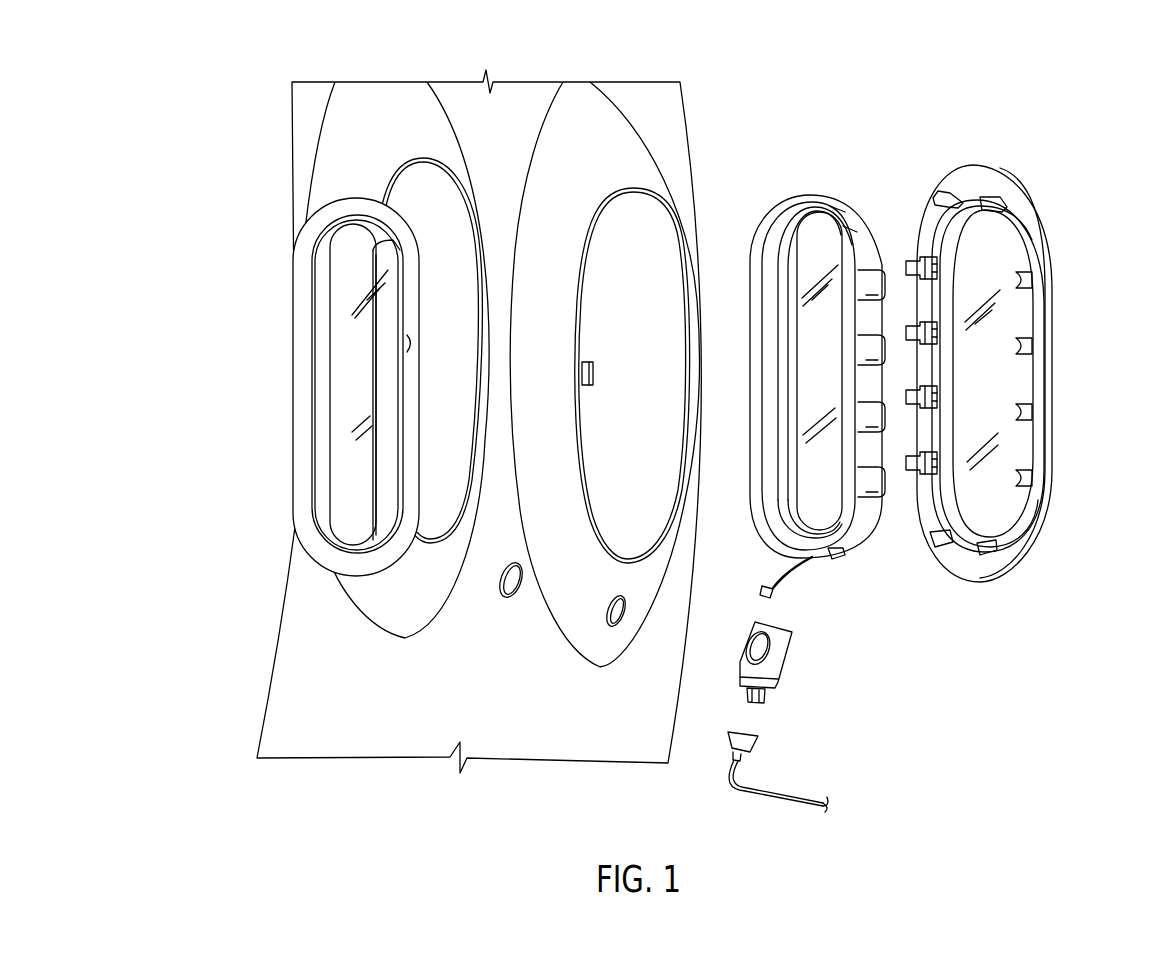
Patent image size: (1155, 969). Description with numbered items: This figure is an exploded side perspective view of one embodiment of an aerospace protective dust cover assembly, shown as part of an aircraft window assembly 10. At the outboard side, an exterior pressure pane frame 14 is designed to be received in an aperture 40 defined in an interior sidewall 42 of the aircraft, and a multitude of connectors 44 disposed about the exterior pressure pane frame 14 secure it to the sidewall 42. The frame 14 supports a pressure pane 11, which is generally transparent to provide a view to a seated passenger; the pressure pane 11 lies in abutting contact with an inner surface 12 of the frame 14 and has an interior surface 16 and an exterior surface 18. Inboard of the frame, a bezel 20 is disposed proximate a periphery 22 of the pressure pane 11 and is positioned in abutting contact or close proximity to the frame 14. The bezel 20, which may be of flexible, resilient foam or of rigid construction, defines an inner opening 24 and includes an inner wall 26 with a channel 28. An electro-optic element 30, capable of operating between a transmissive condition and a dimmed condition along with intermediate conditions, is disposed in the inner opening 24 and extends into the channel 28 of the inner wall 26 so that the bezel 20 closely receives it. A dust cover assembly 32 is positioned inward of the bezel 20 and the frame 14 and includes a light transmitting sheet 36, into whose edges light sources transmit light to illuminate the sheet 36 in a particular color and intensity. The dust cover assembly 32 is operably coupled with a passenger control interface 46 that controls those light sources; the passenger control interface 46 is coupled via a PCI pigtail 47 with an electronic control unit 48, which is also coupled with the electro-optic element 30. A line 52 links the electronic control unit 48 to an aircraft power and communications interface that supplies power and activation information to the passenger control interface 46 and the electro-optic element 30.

The aircraft window assembly 10 is at (982, 717).
The pressure pane 11 is at (1007, 315).
The inner surface 12 is at (972, 210).
The exterior pressure pane frame 14 is at (1040, 525).
The interior surface 16 is at (967, 570).
The exterior surface 18 is at (1002, 437).
The bezel 20 is at (798, 368).
The periphery 22 is at (785, 238).
The inner opening 24 is at (818, 515).
The inner wall 26 is at (775, 503).
The channel 28 is at (783, 430).
The electro-optic element 30 is at (827, 352).
The dust cover assembly 32 is at (250, 463).
The light transmitting sheet 36 is at (343, 398).
The aperture 40 is at (650, 387).
The interior sidewall 42 is at (495, 672).
The connectors 44 is at (923, 323).
The passenger control interface 46 is at (775, 658).
The PCI pigtail 47 is at (792, 583).
The electronic control unit 48 is at (816, 688).
The line 52 is at (762, 790).